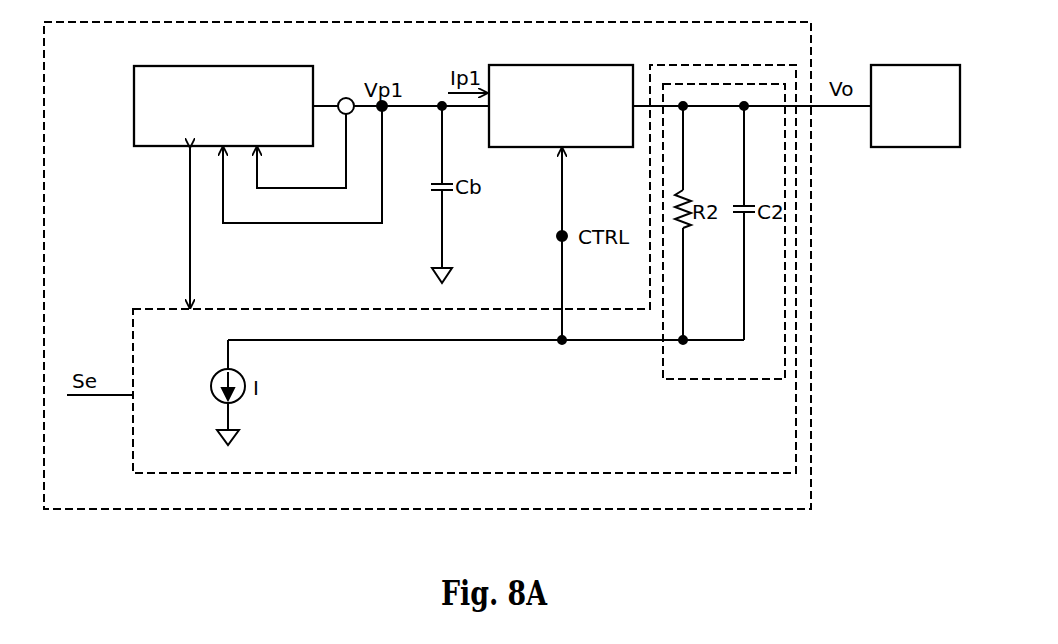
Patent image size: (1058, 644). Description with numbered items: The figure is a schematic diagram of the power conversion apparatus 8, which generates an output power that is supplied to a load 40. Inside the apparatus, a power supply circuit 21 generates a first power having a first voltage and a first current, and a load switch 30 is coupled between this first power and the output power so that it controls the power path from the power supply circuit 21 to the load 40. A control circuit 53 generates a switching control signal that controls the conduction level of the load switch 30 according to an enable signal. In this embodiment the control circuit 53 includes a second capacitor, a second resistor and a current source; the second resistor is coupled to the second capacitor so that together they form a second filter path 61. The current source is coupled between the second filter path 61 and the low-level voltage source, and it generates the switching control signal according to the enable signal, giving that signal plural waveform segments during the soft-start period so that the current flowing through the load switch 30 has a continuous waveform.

The power conversion apparatus 8 is at (790, 22).
The power supply circuit 21 is at (309, 141).
The load switch 30 is at (629, 141).
The load 40 is at (955, 141).
The control circuit 53 is at (791, 467).
The second filter path 61 is at (780, 372).